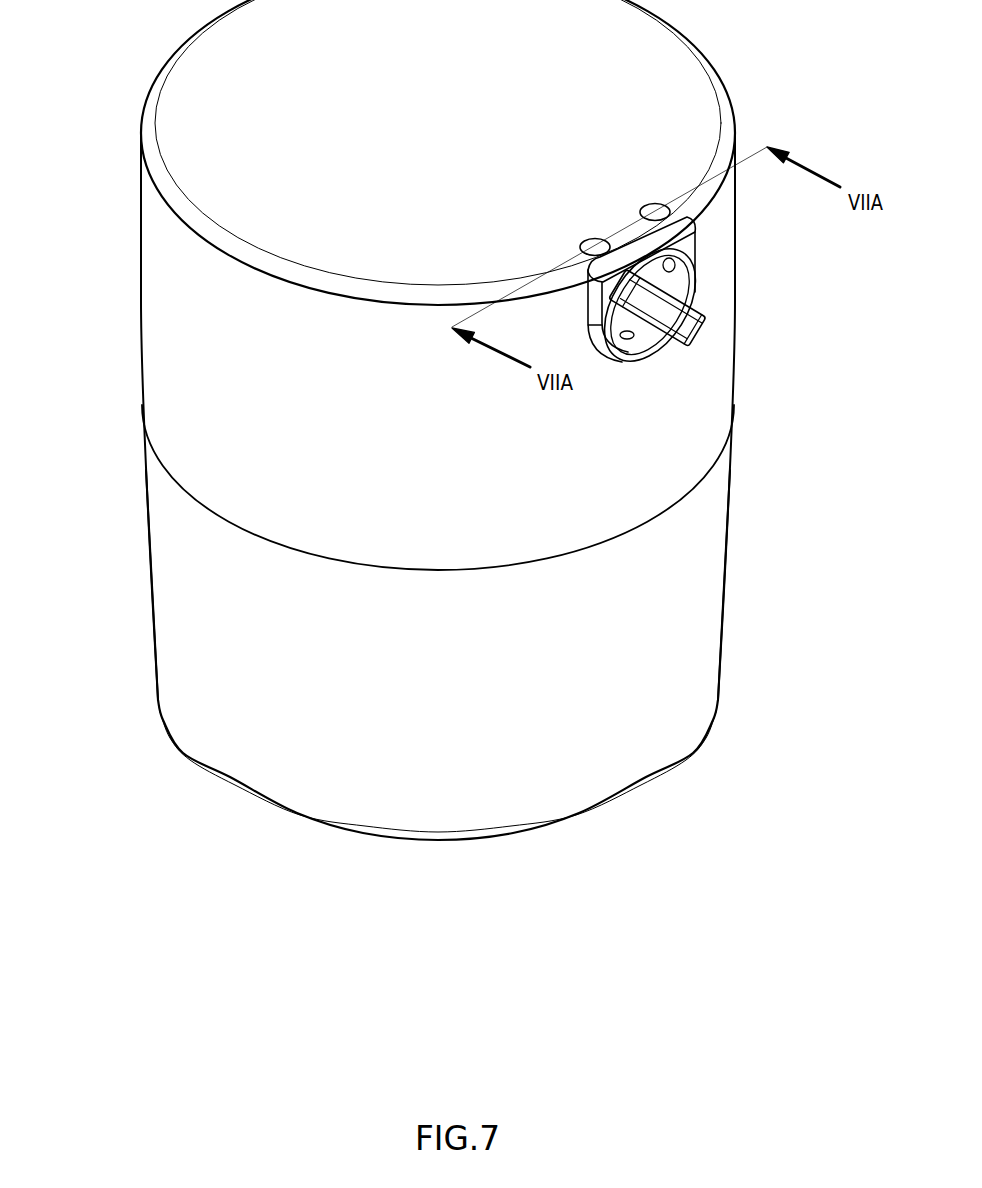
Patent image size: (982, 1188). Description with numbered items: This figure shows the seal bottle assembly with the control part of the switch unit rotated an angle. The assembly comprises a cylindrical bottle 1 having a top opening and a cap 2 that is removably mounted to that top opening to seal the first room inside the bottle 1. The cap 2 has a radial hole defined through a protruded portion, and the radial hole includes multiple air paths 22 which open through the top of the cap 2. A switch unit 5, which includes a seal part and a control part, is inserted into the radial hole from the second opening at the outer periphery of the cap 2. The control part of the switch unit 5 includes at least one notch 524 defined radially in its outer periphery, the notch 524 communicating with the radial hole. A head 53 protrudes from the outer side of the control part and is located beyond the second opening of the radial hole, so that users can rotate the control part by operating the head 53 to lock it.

The cylindrical bottle 1 is at (167, 573).
The cap 2 is at (162, 299).
The switch unit 5 is at (705, 250).
The air paths 22 is at (645, 205).
The head 53 is at (702, 297).
The notch 524 is at (623, 340).